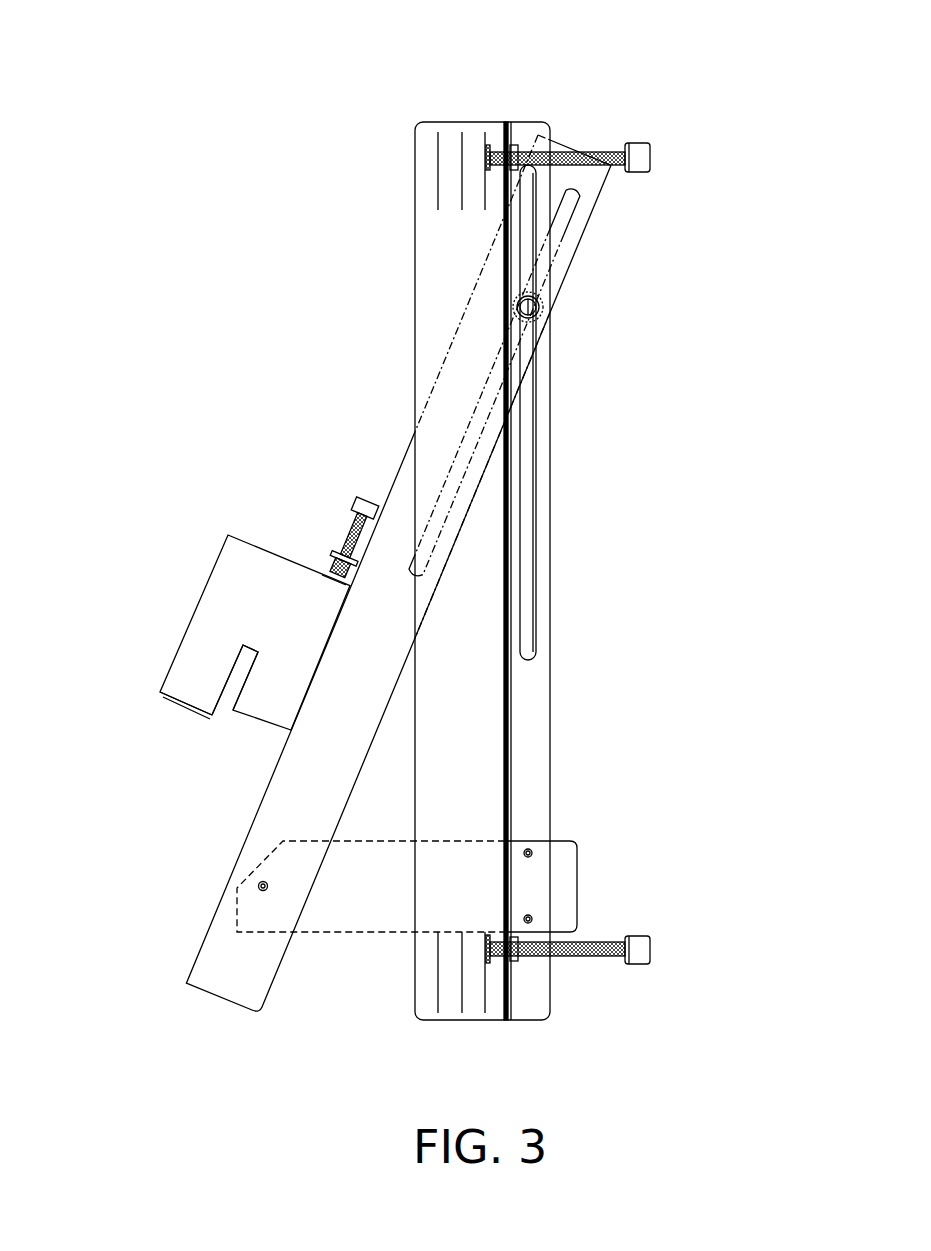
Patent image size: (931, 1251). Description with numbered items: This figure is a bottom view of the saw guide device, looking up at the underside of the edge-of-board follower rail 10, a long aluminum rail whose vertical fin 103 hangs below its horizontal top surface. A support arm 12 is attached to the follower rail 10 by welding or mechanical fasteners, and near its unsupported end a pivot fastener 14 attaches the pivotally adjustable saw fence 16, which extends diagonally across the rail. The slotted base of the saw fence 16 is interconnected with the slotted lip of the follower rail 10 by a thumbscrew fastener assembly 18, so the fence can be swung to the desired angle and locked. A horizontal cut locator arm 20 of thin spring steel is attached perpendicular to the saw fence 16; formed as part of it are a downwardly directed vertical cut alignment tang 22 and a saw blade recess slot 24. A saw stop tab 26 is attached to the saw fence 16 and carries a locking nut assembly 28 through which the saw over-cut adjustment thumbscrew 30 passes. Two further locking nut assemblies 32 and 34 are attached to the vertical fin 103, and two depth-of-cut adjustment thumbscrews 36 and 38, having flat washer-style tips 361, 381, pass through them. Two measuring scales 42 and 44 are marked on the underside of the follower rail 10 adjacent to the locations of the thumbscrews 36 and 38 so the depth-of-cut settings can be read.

The edge-of-board follower rail 10 is at (445, 295).
The vertical fin 103 is at (505, 124).
The support arm 12 is at (570, 882).
The pivot fastener 14 is at (262, 880).
The pivotally adjustable saw fence 16 is at (395, 505).
The thumbscrew fastener assembly 18 is at (545, 302).
The horizontal cut locator arm 20 is at (235, 568).
The vertical cut alignment tang 22 is at (182, 703).
The saw blade recess slot 24 is at (245, 643).
The saw stop tab 26 is at (333, 556).
The locking nut assembly 28 is at (342, 548).
The saw over-cut adjustment thumbscrew 30 is at (360, 503).
The locking nut assembly 32 is at (520, 147).
The locking nut assembly 34 is at (515, 958).
The depth-of-cut adjustment thumbscrew 36 is at (638, 147).
The depth-of-cut adjustment thumbscrew 38 is at (640, 947).
The flat washer-style tip 361 is at (486, 147).
The flat washer-style tip 381 is at (488, 958).
The measuring scale 42 is at (463, 997).
The measuring scale 44 is at (437, 148).